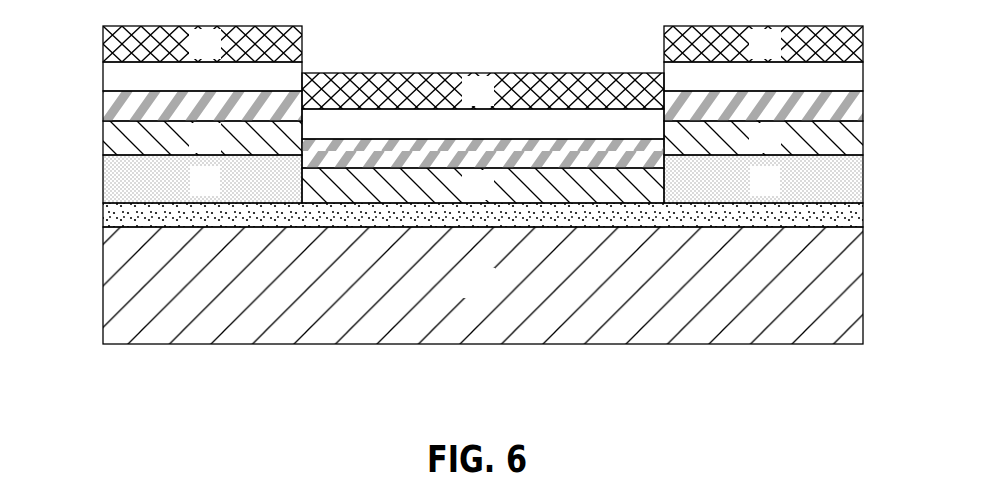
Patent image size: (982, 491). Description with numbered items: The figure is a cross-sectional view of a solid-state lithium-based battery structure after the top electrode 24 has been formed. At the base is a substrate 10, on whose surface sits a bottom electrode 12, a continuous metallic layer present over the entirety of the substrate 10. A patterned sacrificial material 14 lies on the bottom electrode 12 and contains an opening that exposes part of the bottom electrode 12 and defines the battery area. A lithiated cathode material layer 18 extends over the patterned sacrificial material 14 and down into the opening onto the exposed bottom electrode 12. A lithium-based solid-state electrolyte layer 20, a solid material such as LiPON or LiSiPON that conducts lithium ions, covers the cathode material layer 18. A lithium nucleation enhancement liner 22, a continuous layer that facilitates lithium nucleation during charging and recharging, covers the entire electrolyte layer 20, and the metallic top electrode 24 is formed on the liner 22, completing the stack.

The substrate 10 is at (493, 295).
The bottom electrode 12 is at (112, 218).
The patterned sacrificial material 14 is at (219, 193).
The lithiated cathode material layer 18 is at (219, 150).
The lithium-based solid-state electrolyte layer 20 is at (113, 107).
The lithium nucleation enhancement liner 22 is at (113, 72).
The top electrode 24 is at (219, 56).